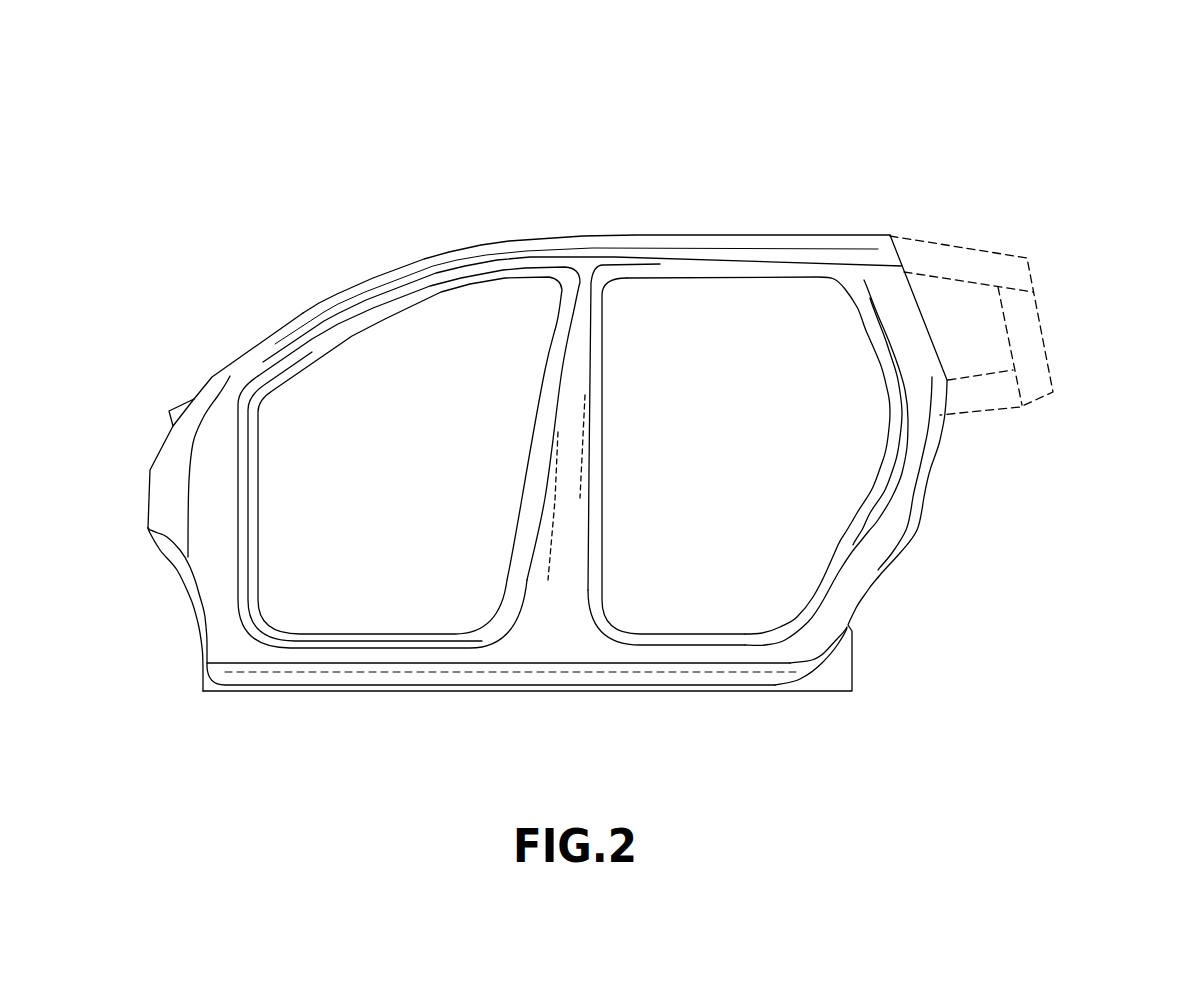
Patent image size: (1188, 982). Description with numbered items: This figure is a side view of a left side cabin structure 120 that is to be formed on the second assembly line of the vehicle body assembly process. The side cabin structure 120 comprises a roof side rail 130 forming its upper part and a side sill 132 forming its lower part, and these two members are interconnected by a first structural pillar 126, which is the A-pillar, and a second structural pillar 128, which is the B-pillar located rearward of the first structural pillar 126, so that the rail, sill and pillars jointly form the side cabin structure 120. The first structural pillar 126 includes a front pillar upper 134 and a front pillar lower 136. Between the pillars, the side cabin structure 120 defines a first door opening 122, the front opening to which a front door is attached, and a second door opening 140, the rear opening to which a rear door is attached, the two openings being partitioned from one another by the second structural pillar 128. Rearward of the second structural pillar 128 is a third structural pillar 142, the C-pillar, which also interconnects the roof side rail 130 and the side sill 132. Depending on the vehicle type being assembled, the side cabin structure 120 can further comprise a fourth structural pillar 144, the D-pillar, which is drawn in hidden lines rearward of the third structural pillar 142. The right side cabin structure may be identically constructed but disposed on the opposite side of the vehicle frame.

The side cabin structure 120 is at (503, 152).
The first door opening 122 is at (408, 323).
The first structural pillar 126 is at (212, 377).
The second structural pillar 128 is at (602, 433).
The roof side rail 130 is at (668, 232).
The side sill 132 is at (547, 690).
The front pillar upper 134 is at (303, 313).
The front pillar lower 136 is at (258, 552).
The second door opening 140 is at (717, 615).
The third structural pillar 142 is at (888, 398).
The fourth structural pillar 144 is at (1043, 330).